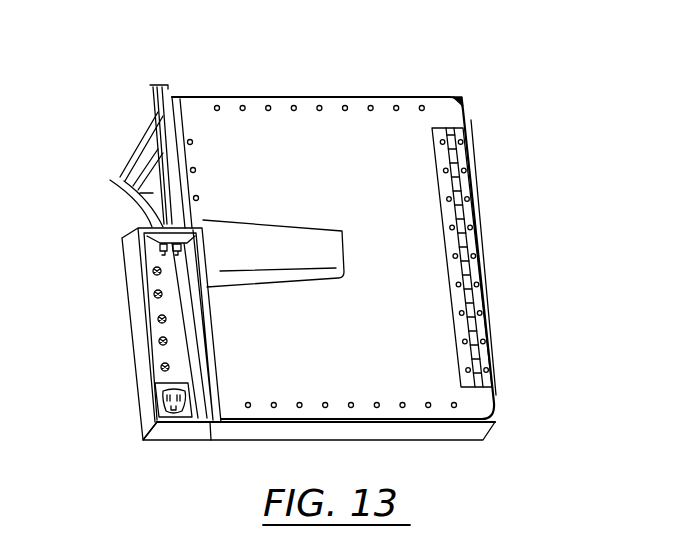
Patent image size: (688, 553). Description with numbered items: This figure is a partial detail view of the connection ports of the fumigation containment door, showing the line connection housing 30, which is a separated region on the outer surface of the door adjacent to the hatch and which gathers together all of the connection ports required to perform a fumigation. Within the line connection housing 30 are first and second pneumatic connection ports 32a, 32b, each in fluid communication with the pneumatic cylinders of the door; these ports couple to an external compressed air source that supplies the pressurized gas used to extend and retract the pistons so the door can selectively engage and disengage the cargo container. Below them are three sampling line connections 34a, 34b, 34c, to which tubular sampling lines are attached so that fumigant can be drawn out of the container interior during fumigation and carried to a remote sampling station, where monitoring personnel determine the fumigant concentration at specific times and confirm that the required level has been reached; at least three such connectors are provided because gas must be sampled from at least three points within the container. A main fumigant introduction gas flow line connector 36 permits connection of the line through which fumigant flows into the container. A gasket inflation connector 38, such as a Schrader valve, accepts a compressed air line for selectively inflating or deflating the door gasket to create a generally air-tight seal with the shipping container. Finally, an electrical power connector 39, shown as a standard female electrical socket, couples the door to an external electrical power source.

The line connection housing 30 is at (118, 233).
The first pneumatic connection port 32a is at (118, 180).
The second pneumatic connection port 32b is at (118, 176).
The sampling line connection 34a is at (152, 270).
The sampling line connection 34b is at (154, 293).
The sampling line connection 34c is at (158, 319).
The main fumigant introduction gas flow line connector 36 is at (159, 341).
The gasket inflation connector 38 is at (161, 367).
The electrical power connector 39 is at (160, 395).